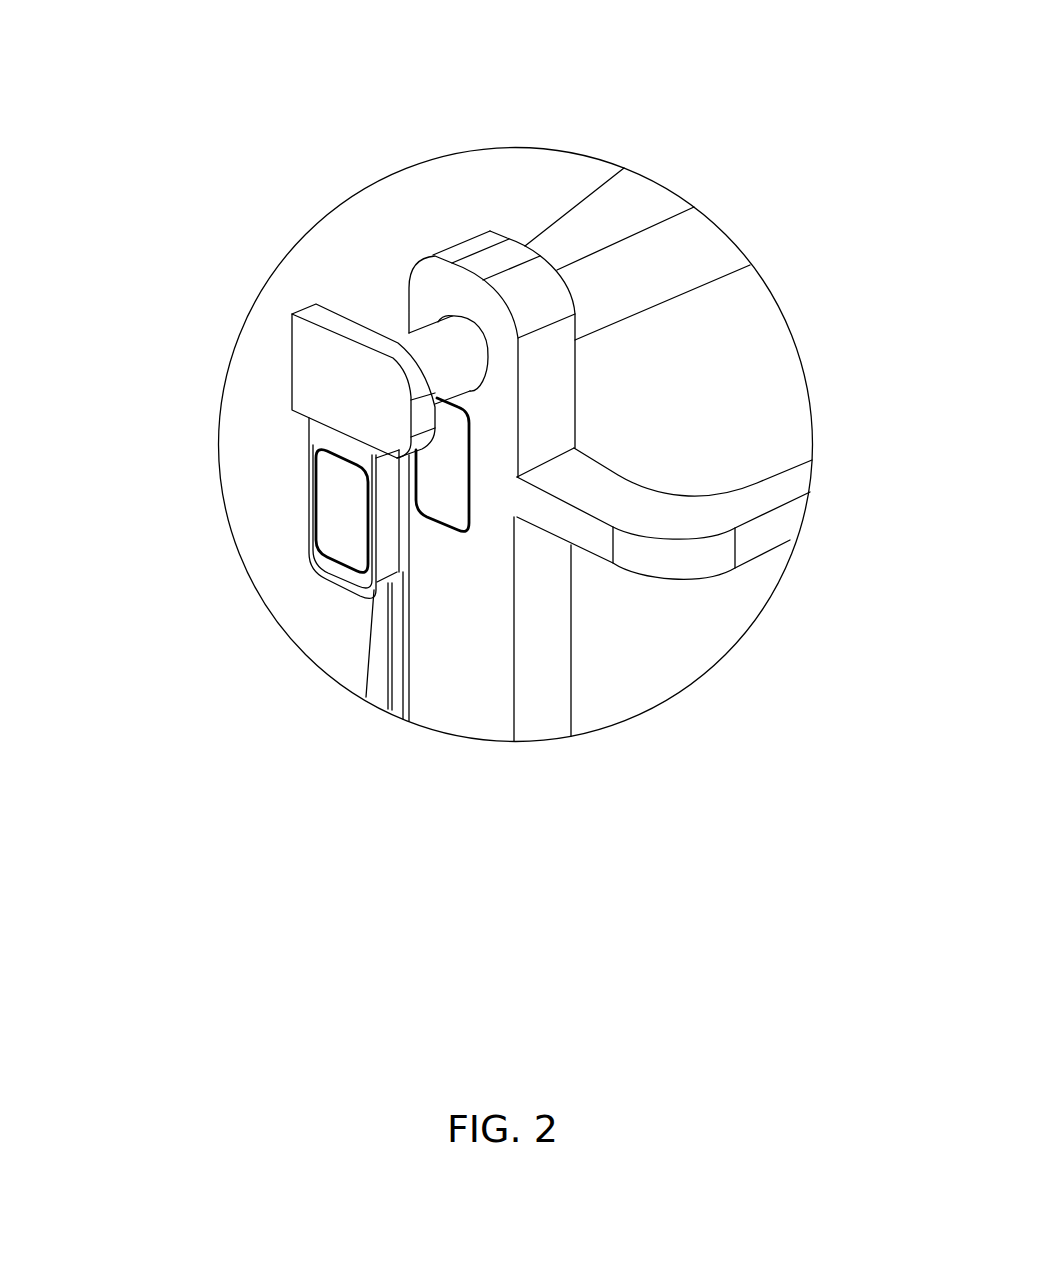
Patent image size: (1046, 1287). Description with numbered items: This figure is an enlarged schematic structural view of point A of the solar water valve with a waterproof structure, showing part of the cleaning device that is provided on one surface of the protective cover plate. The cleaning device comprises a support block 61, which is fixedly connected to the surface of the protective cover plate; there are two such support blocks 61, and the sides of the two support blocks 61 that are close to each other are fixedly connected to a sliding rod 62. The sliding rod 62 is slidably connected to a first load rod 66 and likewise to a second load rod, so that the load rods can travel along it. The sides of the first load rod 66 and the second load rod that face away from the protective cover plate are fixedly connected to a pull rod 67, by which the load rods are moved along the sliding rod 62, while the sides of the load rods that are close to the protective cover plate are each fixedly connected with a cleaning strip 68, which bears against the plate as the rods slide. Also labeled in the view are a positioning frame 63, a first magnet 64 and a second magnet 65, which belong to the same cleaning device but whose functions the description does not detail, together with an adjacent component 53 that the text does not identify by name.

The frame 53 is at (728, 427).
The support block 61 is at (330, 370).
The sliding rod 62 is at (643, 267).
The positioning frame 63 is at (352, 587).
The first magnet 64 is at (340, 525).
The second magnet 65 is at (445, 480).
The first load rod 66 is at (463, 630).
The pull rod 67 is at (727, 512).
The cleaning strip 68 is at (398, 680).
The point A is at (228, 537).